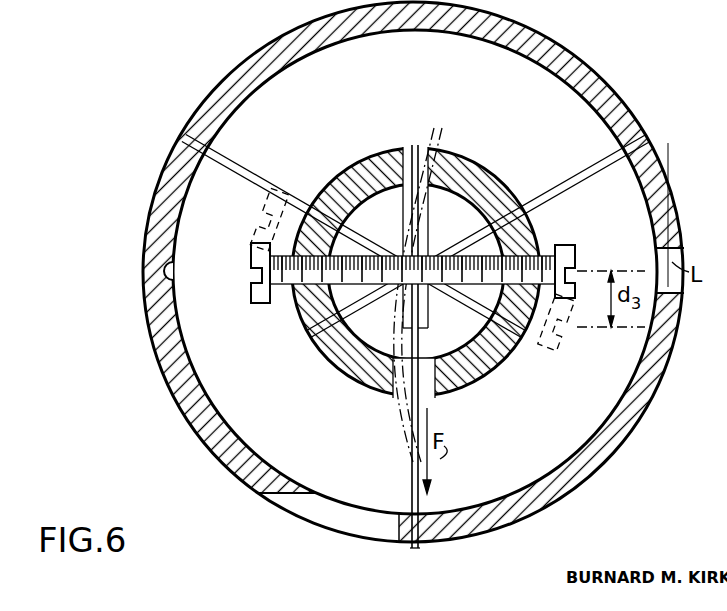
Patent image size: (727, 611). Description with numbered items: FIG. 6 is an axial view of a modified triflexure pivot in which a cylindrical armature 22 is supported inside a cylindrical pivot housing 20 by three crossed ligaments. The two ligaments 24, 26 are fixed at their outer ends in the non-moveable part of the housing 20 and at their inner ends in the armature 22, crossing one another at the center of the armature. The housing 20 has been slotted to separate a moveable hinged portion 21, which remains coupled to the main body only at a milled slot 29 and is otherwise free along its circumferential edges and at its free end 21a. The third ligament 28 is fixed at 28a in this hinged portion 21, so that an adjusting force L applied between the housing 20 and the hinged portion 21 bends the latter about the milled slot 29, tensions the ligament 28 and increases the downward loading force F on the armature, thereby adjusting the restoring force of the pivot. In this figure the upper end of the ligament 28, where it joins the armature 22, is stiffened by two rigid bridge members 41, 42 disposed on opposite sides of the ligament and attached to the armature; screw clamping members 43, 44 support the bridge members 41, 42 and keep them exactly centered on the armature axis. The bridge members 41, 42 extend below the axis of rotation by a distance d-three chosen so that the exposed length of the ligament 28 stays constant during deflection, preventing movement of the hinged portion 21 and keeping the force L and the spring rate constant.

The pivot housing 20 is at (398, 30).
The hinged portion of housing 21 is at (645, 404).
The free end of hinged portion 21a is at (668, 294).
The armature 22 is at (362, 170).
The ligament 24 is at (284, 180).
The ligament 26 is at (579, 177).
The third ligament 28 is at (410, 456).
The fixing point of third ligament 28a is at (416, 547).
The milled slot 29 is at (153, 270).
The bridge member 41 is at (410, 162).
The bridge member 42 is at (430, 162).
The screw clamping member 43 is at (525, 255).
The screw clamping member 44 is at (287, 302).